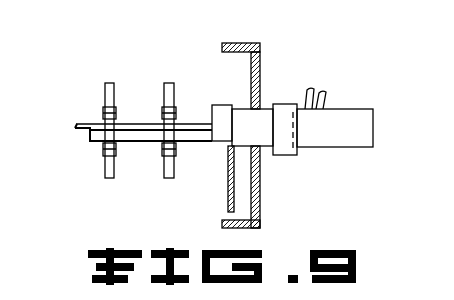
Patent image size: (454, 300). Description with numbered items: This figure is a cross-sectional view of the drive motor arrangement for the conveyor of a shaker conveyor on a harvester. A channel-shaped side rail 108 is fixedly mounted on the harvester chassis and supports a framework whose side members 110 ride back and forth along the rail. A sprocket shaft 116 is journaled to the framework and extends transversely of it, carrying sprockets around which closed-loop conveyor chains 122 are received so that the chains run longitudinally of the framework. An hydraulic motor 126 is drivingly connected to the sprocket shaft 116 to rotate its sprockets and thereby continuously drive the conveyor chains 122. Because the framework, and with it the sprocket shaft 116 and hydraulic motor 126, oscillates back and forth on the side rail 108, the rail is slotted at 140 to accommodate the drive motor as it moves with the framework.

The side rails 108 is at (261, 207).
The side members 110 is at (228, 189).
The sprocket shaft 116 is at (75, 127).
The conveyor chains 122 is at (163, 112).
The hydraulic motor 126 is at (345, 113).
The slot 140 is at (250, 105).